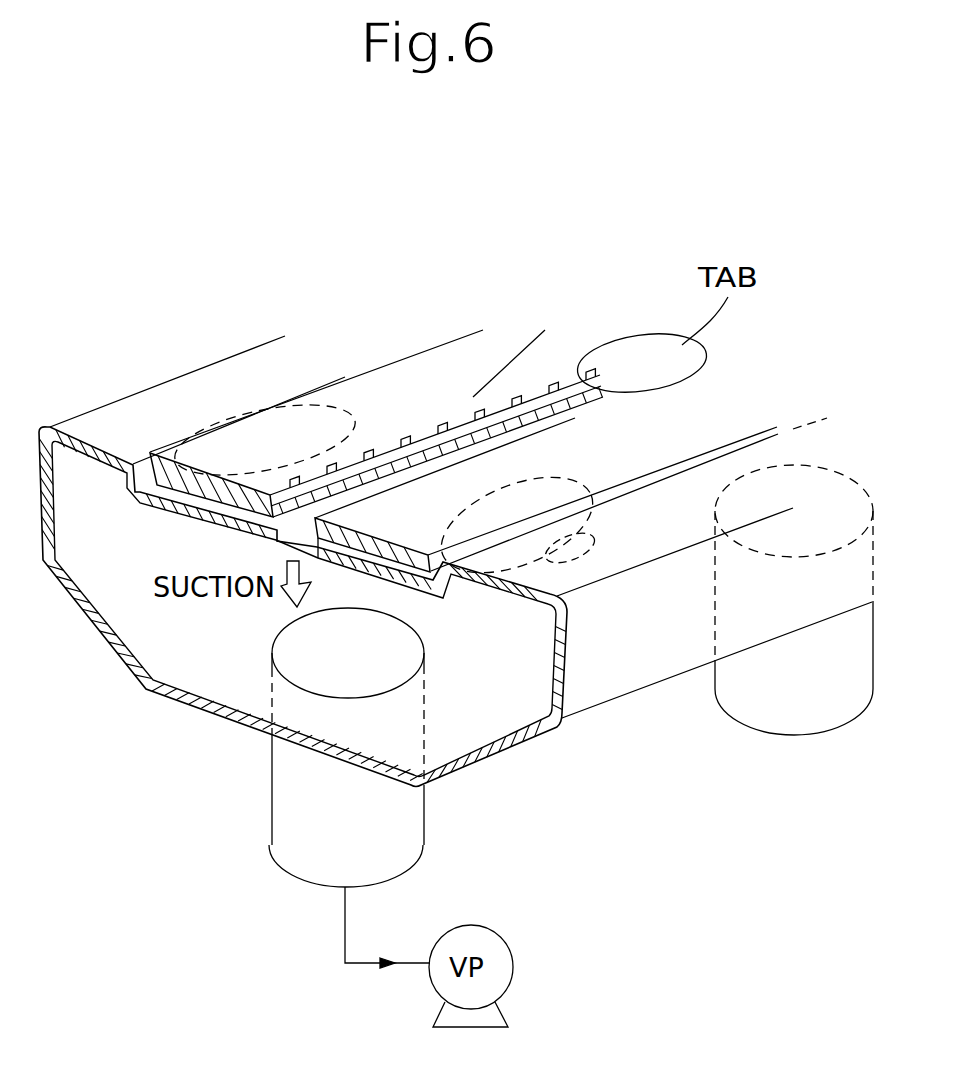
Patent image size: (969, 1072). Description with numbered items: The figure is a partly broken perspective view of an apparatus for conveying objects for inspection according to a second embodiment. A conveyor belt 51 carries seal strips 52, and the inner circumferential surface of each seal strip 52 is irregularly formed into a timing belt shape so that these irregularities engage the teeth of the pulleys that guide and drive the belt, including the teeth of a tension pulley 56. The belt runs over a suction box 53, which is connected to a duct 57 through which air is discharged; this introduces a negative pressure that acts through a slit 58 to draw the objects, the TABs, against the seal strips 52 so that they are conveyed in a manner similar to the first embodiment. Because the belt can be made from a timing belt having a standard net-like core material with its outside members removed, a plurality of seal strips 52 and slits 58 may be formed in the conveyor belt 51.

The conveyor belt 51 is at (488, 378).
The seal strip 52 is at (552, 463).
The suction box 53 is at (128, 649).
The tension pulley 56 is at (597, 533).
The duct 57 is at (283, 802).
The slit 58 is at (440, 448).